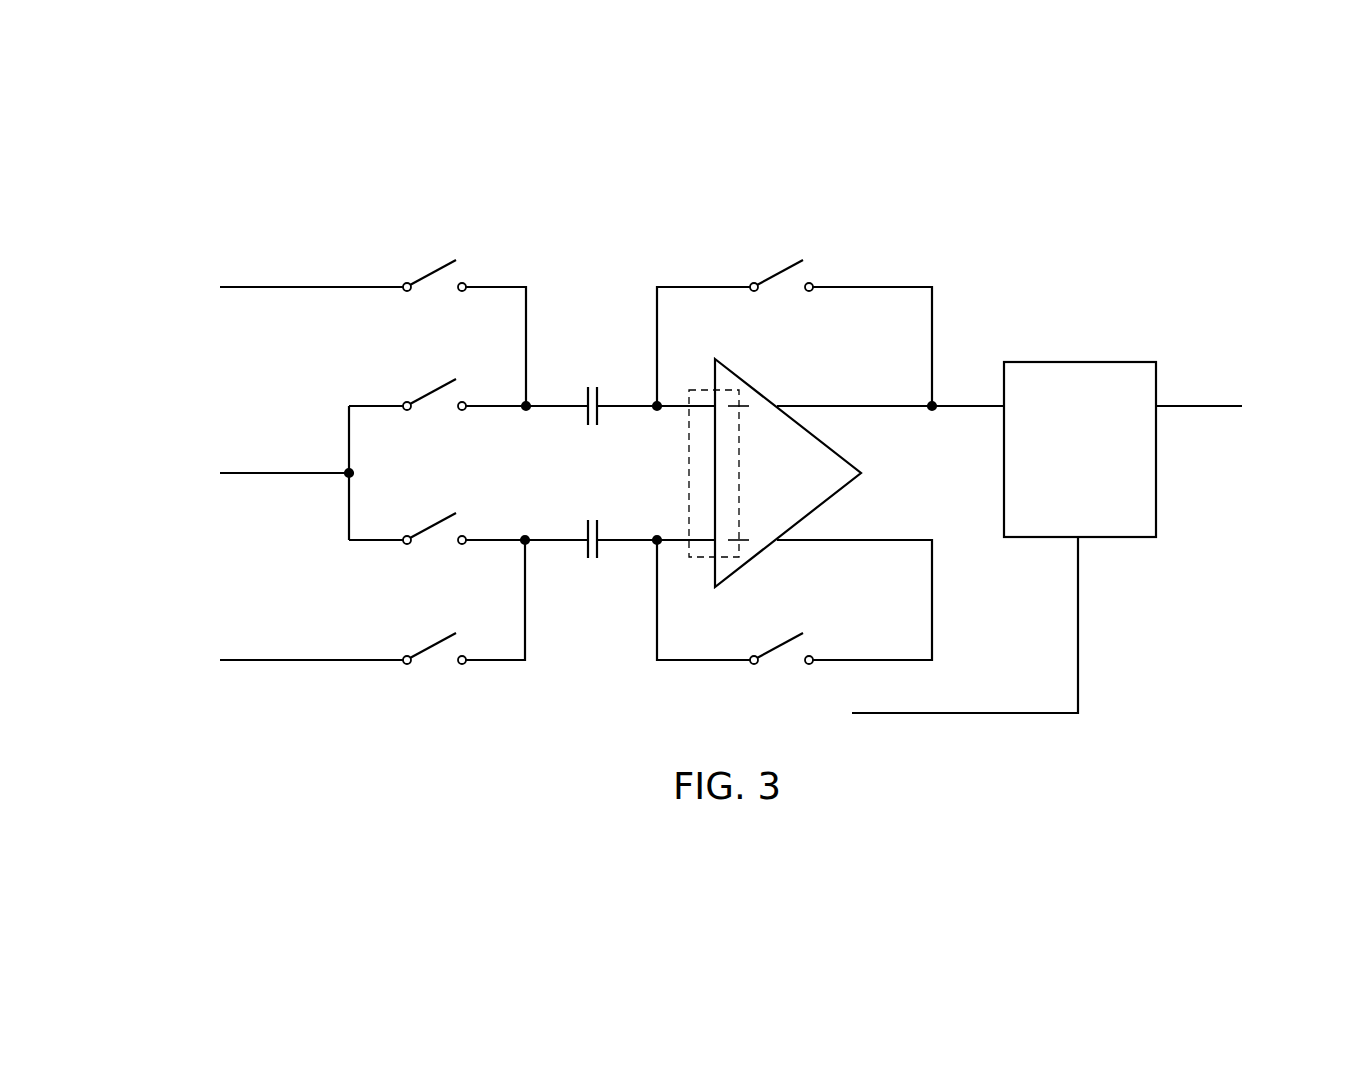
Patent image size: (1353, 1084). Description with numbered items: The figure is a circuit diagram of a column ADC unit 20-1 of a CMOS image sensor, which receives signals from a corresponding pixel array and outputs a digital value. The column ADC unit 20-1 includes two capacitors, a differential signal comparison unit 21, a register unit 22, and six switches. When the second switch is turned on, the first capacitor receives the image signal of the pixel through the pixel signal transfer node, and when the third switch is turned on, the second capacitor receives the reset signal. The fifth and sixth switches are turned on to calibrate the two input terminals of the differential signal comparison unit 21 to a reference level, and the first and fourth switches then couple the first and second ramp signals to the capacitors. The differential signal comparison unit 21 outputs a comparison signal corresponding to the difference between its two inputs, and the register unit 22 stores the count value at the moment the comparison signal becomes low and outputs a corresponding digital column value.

The column ADC unit 20-1 is at (1212, 255).
The differential signal comparison unit 21 is at (822, 437).
The register unit 22 is at (1076, 362).